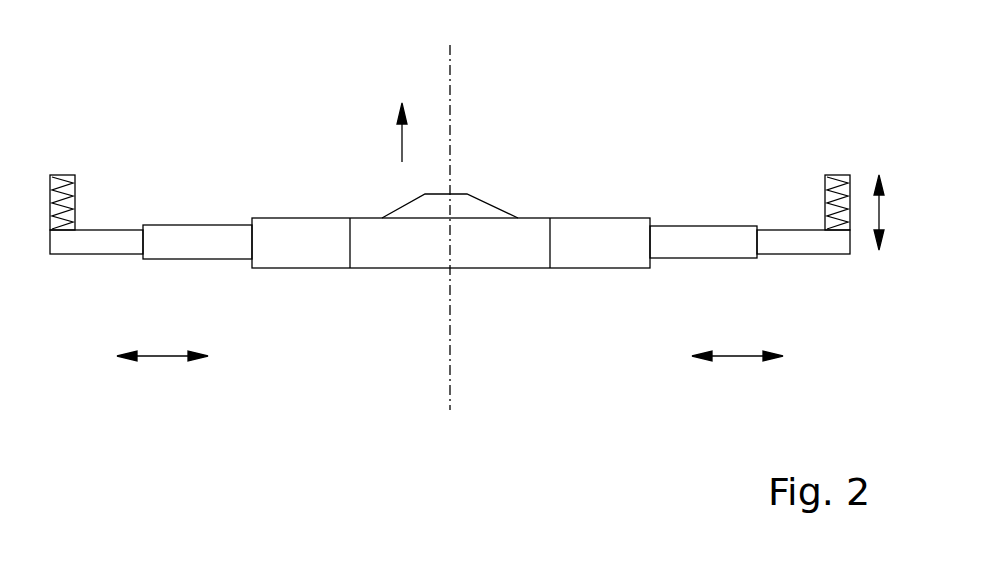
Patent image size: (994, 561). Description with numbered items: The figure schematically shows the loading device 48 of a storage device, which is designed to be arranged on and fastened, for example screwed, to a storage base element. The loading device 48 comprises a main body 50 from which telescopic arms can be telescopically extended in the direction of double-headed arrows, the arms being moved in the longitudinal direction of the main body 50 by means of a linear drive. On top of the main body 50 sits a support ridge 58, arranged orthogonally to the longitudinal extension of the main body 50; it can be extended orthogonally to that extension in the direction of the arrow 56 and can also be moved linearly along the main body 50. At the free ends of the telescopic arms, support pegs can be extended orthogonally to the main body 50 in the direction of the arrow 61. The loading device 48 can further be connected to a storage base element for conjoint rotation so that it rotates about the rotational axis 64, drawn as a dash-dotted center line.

The loading device 48 is at (670, 53).
The main body 50 is at (512, 252).
The arrow 56 is at (400, 143).
The support ridge 58 is at (465, 193).
The arrow 61 is at (880, 210).
The rotational axis 64 is at (452, 87).